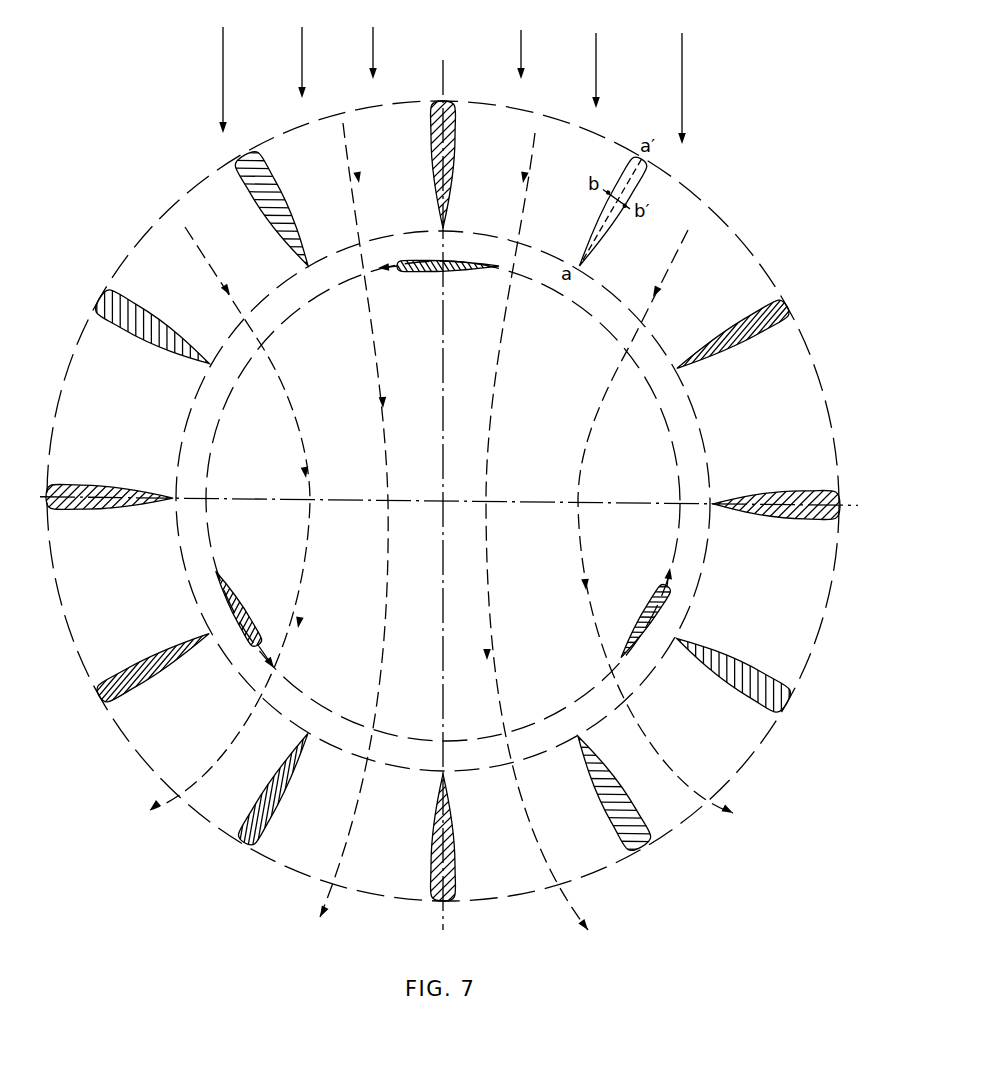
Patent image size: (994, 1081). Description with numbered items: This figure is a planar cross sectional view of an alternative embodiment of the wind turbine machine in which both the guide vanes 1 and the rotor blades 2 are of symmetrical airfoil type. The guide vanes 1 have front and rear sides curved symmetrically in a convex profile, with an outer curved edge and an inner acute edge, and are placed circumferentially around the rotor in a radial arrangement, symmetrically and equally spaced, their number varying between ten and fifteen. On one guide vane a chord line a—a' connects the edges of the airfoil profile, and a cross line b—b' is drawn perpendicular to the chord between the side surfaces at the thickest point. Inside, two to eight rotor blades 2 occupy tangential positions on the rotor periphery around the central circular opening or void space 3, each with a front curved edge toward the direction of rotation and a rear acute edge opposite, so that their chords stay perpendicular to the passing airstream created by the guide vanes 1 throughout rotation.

The guide vanes 1 is at (158, 670).
The rotor blades 2 is at (650, 653).
The central circular opening or void space 3 is at (354, 654).